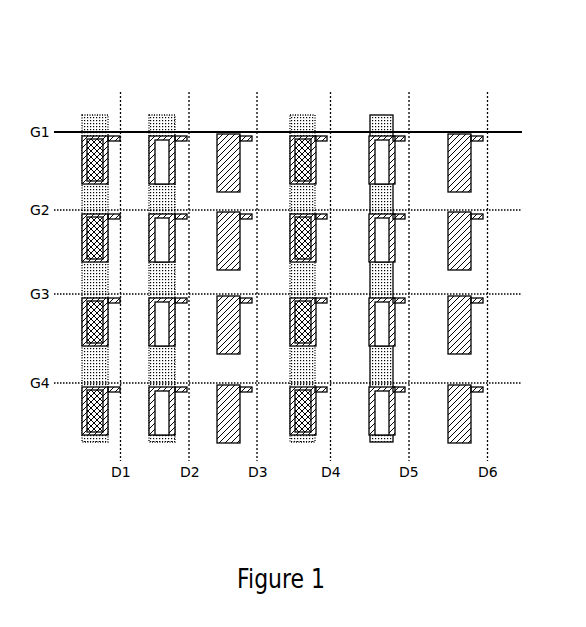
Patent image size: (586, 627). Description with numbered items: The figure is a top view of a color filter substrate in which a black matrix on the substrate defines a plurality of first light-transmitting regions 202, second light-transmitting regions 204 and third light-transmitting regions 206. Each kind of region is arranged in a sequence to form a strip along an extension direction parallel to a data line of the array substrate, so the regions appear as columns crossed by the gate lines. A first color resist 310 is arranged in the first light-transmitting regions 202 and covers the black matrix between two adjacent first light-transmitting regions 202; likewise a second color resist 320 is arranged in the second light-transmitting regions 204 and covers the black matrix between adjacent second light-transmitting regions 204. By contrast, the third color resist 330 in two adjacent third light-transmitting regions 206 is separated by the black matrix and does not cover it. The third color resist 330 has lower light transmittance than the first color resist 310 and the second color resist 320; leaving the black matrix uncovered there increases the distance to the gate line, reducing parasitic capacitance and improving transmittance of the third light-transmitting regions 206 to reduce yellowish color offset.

The first light-transmitting region 202 is at (98, 115).
The second light-transmitting region 204 is at (383, 153).
The third light-transmitting region 206 is at (458, 432).
The first color resist 310 is at (97, 115).
The second color resist 320 is at (173, 115).
The third color resist 330 is at (447, 140).